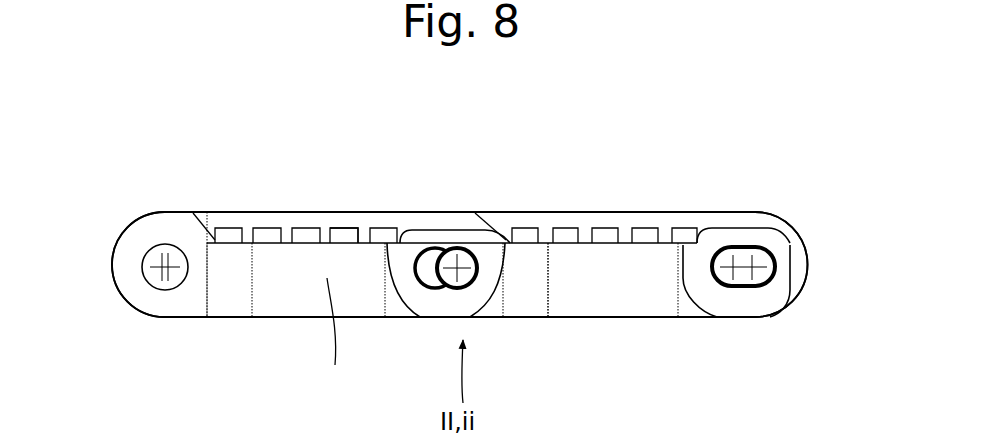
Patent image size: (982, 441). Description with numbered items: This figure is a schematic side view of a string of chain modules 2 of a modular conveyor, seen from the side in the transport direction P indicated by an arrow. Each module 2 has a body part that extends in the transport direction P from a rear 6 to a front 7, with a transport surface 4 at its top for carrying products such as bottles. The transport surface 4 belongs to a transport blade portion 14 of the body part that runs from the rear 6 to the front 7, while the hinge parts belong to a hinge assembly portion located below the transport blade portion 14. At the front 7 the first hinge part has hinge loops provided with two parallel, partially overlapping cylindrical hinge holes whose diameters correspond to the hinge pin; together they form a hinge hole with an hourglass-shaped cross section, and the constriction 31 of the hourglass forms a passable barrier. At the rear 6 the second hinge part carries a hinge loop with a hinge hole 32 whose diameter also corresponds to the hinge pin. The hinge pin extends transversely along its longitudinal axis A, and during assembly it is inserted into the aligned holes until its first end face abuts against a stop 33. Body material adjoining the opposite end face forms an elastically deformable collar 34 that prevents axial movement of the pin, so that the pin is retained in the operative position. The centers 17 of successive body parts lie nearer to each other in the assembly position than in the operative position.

The module 2 is at (267, 355).
The transport surface 4 is at (293, 212).
The rear 6 is at (88, 262).
The front 7 is at (814, 256).
The transport blade portion 14 is at (365, 228).
The center 17 is at (623, 278).
The constriction 31 is at (754, 247).
The hinge hole 32 is at (164, 244).
The stop 33 is at (773, 282).
The elastically deformable collar 34 is at (453, 292).
The longitudinal axis A is at (438, 248).
The transport direction P is at (506, 110).